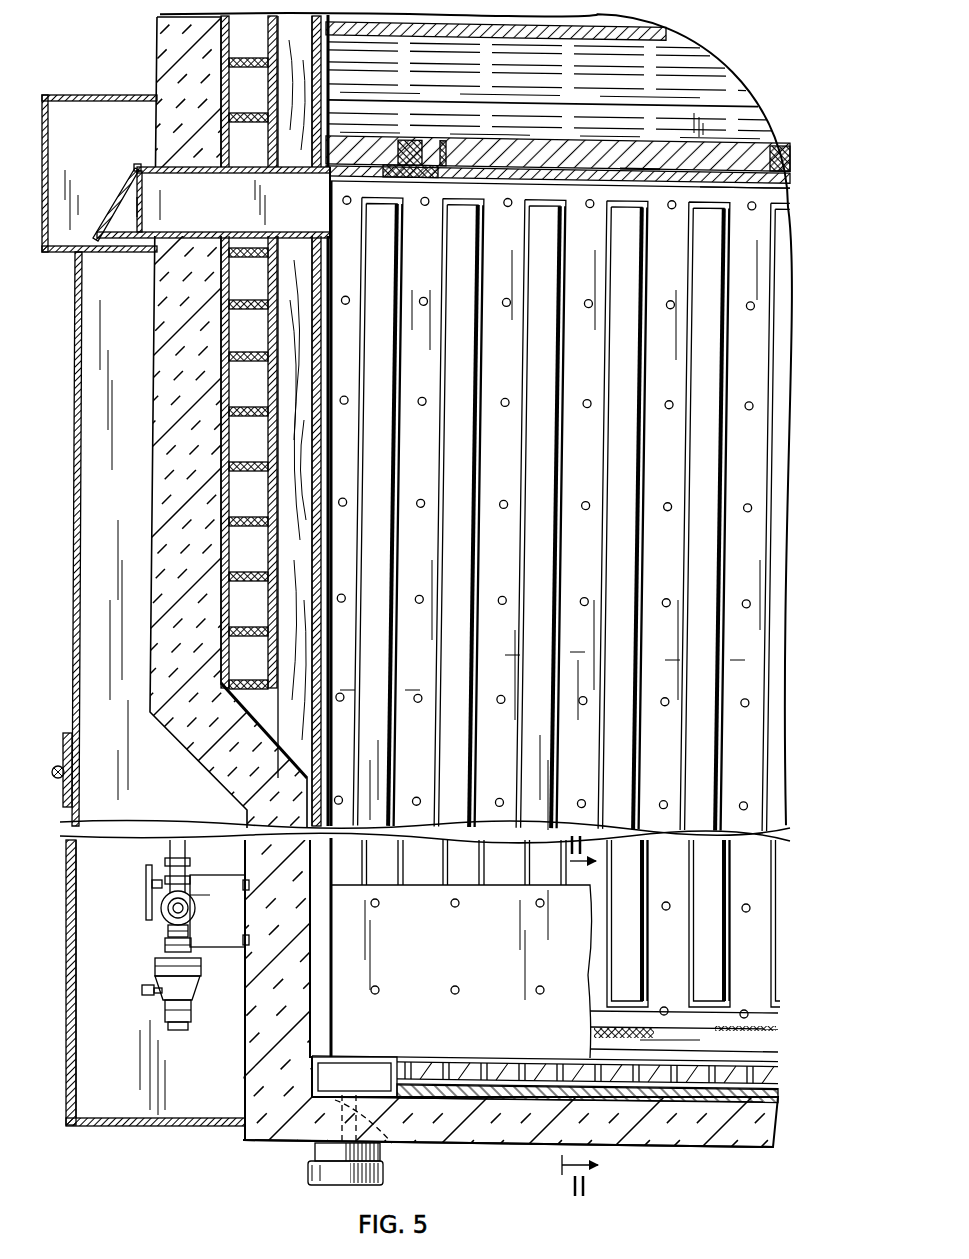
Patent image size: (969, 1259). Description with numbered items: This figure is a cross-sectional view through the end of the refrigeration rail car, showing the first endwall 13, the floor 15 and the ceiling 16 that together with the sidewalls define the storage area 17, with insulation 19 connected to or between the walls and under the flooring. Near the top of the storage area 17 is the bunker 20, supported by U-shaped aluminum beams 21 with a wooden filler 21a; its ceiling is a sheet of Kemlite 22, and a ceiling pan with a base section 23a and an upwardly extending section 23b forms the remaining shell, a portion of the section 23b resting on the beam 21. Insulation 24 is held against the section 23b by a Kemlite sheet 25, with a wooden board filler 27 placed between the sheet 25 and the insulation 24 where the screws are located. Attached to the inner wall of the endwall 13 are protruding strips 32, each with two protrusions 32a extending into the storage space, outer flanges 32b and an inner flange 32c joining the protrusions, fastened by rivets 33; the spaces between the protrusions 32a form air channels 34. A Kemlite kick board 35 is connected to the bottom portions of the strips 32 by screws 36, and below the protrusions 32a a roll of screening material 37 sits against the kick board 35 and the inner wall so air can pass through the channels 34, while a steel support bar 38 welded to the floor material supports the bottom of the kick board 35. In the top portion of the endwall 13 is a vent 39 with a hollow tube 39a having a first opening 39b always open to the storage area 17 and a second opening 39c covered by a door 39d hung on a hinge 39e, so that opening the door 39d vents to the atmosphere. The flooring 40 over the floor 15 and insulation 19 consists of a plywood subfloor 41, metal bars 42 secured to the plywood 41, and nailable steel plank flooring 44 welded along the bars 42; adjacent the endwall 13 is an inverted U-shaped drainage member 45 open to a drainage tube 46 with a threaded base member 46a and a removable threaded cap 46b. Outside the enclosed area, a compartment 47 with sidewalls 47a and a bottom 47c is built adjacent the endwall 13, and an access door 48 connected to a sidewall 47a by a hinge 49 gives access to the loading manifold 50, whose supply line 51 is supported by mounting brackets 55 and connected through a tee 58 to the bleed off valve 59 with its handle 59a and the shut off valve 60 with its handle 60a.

The first endwall 13 is at (149, 545).
The floor 15 is at (503, 1152).
The ceiling 16 is at (604, 20).
The storage area 17 is at (641, 152).
The insulation 19 is at (183, 447).
The bunker 20 is at (650, 80).
The U-shaped aluminum beam 21 is at (437, 158).
The wooden filler 21a is at (412, 146).
The Kemlite ceiling 22 is at (556, 38).
The base section 23a is at (500, 134).
The upwardly extending section 23b is at (702, 122).
The insulation 24 is at (547, 158).
The Kemlite sheet 25 is at (738, 187).
The wooden board filler 27 is at (560, 191).
The protruding strip 32 is at (359, 189).
The protrusion 32a is at (450, 757).
The flange 32b is at (524, 464).
The inner flange 32c is at (440, 466).
The rivet 33 is at (424, 396).
The channel 34 is at (418, 686).
The Kemlite kick board 35 is at (484, 966).
The screw 36 is at (452, 903).
The screening material 37 is at (594, 1030).
The steel support bar 38 is at (596, 1043).
The vent 39 is at (88, 190).
The hollow tube 39a is at (242, 173).
The first opening 39b is at (328, 190).
The second opening 39c is at (123, 207).
The door 39d is at (120, 193).
The hinge 39e is at (138, 160).
The flooring 40 is at (440, 1042).
The plywood subfloor 41 is at (700, 1100).
The metal bar 42 is at (455, 1097).
The nailable steel plank flooring 44 is at (410, 1055).
The drainage member 45 is at (355, 1055).
The drainage tube 46 is at (393, 1146).
The threaded base member 46a is at (315, 1150).
The removable threaded cap 46b is at (320, 1185).
The compartment 47 is at (74, 388).
The sidewall 47a is at (79, 456).
The bottom 47c is at (168, 1130).
The access door 48 is at (56, 958).
The hinge 49 is at (54, 772).
The loading manifold 50 is at (151, 1029).
The supply line 51 is at (181, 840).
The mounting bracket 55 is at (218, 888).
The tee 58 is at (185, 891).
The bleed off valve 59 is at (177, 1023).
The handle 59a is at (143, 997).
The shut off valve 60 is at (163, 918).
The handle 60a is at (145, 884).